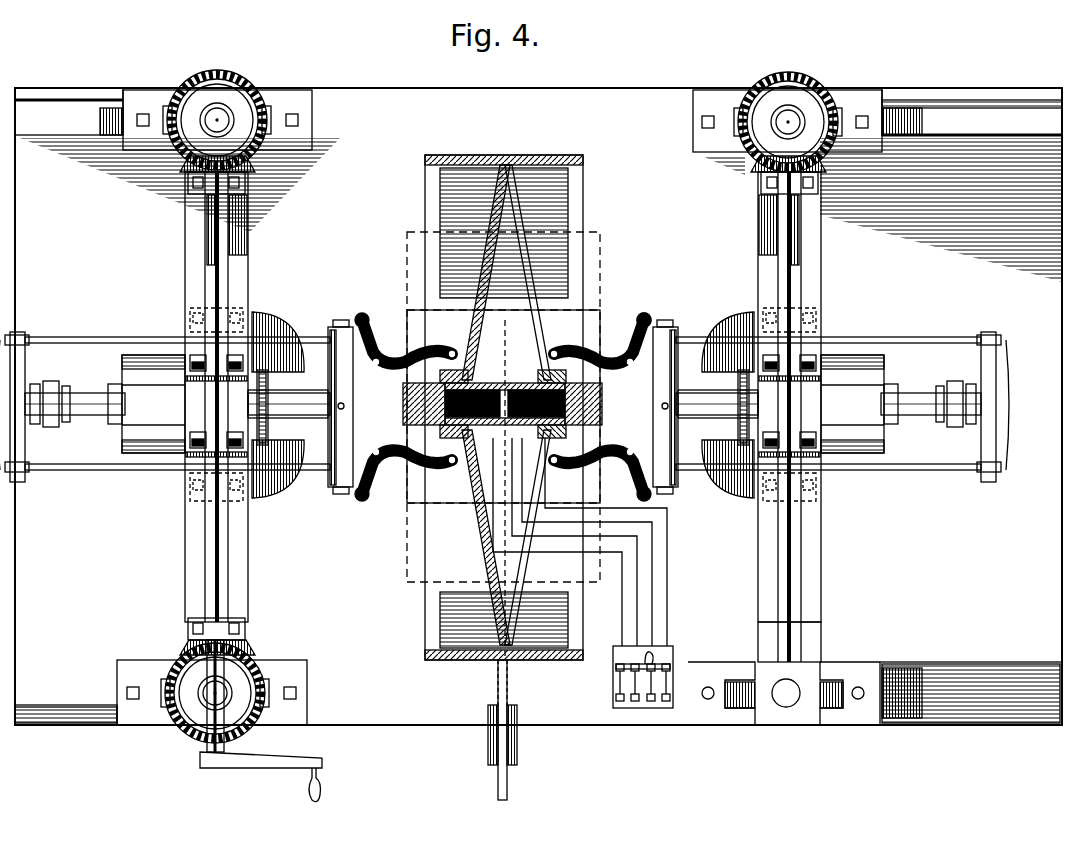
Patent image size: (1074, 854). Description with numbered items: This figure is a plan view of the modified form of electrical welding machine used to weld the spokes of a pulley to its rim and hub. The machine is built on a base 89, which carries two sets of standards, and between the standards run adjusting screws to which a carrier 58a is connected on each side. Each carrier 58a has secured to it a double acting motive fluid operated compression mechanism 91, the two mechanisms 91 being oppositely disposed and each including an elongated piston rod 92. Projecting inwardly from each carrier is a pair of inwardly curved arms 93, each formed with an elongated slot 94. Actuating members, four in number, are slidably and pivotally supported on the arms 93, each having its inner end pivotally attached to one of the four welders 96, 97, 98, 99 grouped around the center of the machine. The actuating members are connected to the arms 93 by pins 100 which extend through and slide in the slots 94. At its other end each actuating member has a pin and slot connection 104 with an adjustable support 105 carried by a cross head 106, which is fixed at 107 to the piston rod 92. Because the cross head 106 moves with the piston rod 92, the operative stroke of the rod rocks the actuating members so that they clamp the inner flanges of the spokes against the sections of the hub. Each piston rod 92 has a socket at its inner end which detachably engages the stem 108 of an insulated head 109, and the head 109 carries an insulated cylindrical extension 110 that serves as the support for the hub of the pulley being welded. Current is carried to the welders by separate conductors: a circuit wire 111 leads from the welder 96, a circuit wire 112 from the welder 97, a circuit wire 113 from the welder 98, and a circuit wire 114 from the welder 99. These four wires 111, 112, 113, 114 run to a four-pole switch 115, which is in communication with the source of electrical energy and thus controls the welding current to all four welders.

The vertical guide bar 58a is at (243, 544).
The base 89 is at (538, 406).
The double acting motive fluid operated compression mechanism 91 is at (504, 407).
The piston rod 92 is at (292, 388).
The inwardly curved arm 93 is at (276, 328).
The elongated slot 94 is at (333, 328).
The welder 96 is at (474, 374).
The welder 97 is at (470, 452).
The welder 98 is at (532, 456).
The welder 99 is at (537, 372).
The pin 100 is at (640, 433).
The pin and slot connection 104 is at (620, 340).
The adjustable support 105 is at (644, 325).
The cross head 106 is at (680, 355).
The fixing point of cross head 107 is at (669, 406).
The stem 108 is at (402, 424).
The insulated head 109 is at (400, 386).
The insulated cylindrical extension 110 is at (516, 383).
The circuit wire 111 is at (630, 557).
The circuit wire 112 is at (625, 586).
The circuit wire 113 is at (642, 536).
The circuit wire 114 is at (668, 509).
The four-pole switch 115 is at (673, 648).